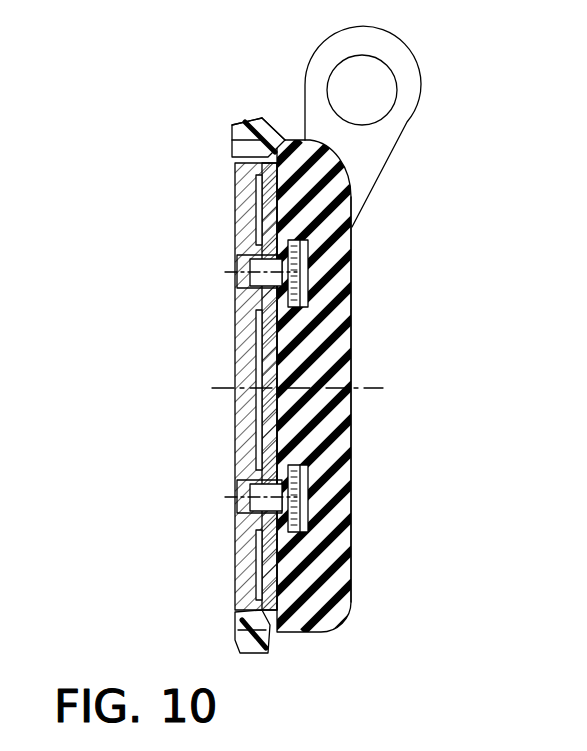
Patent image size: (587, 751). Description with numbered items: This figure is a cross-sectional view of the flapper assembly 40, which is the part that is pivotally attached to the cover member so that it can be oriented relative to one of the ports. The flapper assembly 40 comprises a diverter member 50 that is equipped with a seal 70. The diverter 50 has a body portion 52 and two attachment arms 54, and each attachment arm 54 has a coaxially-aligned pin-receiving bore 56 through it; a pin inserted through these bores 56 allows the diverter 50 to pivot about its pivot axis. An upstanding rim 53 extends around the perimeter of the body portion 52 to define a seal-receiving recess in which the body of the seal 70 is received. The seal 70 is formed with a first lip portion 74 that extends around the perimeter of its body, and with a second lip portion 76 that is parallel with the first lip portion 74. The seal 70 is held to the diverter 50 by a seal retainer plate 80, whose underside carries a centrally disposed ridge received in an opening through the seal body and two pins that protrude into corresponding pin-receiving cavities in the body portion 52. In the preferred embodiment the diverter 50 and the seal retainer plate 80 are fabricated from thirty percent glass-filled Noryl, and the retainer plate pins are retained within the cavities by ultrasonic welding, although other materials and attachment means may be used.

The flapper assembly 40 is at (443, 232).
The diverter member 50 is at (362, 367).
The body portion 52 is at (340, 457).
The upstanding rim 53 is at (273, 137).
The attachment arm 54 is at (370, 145).
The pin-receiving bore 56 is at (373, 66).
The seal 70 is at (257, 660).
The first lip portion 74 is at (232, 147).
The second lip portion 76 is at (233, 132).
The seal retainer plate 80 is at (235, 193).